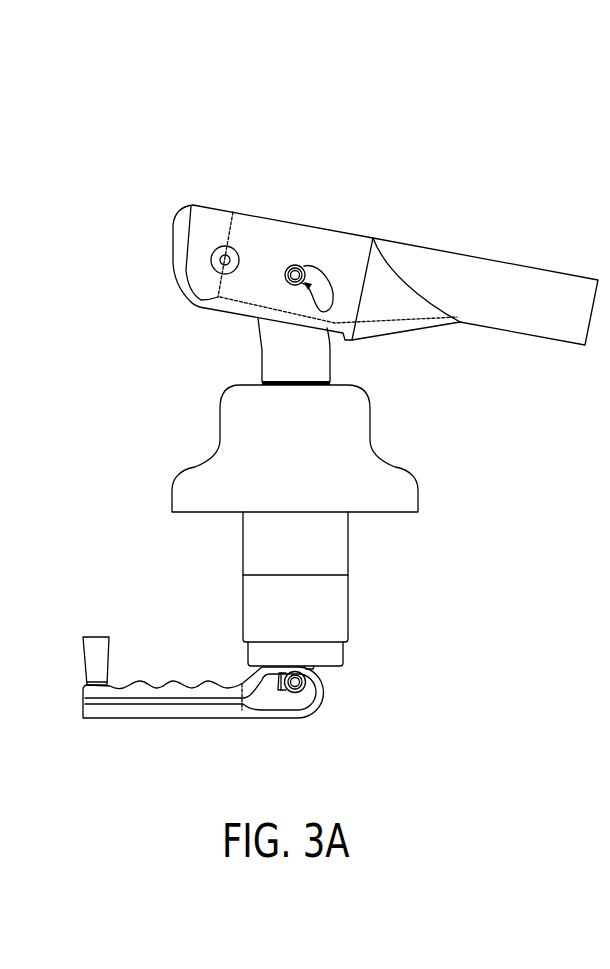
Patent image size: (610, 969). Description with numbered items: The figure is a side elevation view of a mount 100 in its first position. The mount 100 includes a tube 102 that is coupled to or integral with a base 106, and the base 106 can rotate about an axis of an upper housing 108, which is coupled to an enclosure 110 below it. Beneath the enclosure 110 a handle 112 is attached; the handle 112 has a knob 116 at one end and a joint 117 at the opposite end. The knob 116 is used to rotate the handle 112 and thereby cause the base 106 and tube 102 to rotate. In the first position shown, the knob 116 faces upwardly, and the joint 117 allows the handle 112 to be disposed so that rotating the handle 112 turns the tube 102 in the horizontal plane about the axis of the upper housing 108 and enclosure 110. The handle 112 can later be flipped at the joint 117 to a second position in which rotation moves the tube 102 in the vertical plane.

The mount 100 is at (232, 120).
The tube 102 is at (538, 266).
The base 106 is at (309, 226).
The upper housing 108 is at (328, 360).
The enclosure 110 is at (415, 473).
The handle 112 is at (201, 722).
The knob 116 is at (95, 637).
The joint 117 is at (325, 692).